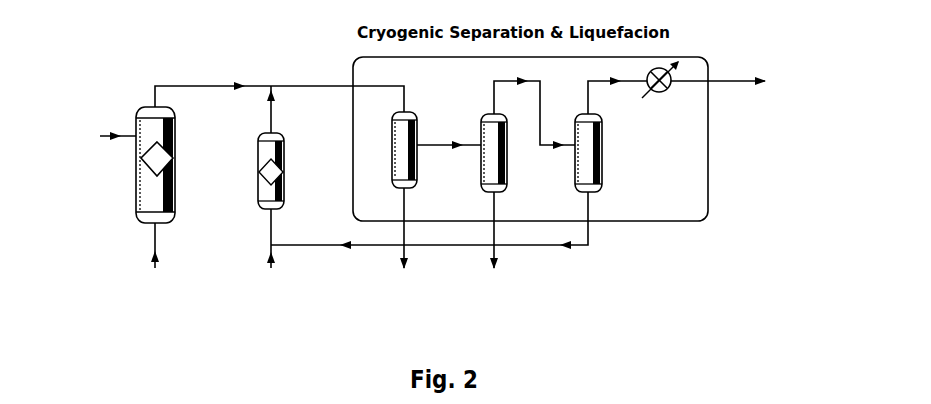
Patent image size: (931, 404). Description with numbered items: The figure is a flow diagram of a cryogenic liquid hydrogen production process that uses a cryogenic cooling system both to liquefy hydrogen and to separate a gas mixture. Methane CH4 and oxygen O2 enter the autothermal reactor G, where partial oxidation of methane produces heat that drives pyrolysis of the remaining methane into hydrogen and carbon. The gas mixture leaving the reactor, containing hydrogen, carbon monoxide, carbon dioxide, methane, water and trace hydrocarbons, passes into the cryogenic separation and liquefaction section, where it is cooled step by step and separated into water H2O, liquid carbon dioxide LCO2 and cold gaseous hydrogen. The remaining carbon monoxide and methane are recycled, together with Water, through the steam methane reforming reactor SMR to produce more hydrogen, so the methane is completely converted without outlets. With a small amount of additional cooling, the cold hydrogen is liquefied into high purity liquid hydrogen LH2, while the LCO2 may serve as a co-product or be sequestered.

The autothermal reactor G is at (174, 166).
The methane feed CH4 is at (103, 143).
The oxygen feed O2 is at (161, 261).
The steam methane reforming reactor SMR is at (293, 171).
The water feed Water is at (264, 250).
The water product H2O is at (404, 201).
The liquid carbon dioxide LCO2 is at (494, 203).
The liquid hydrogen product LH2 is at (691, 124).